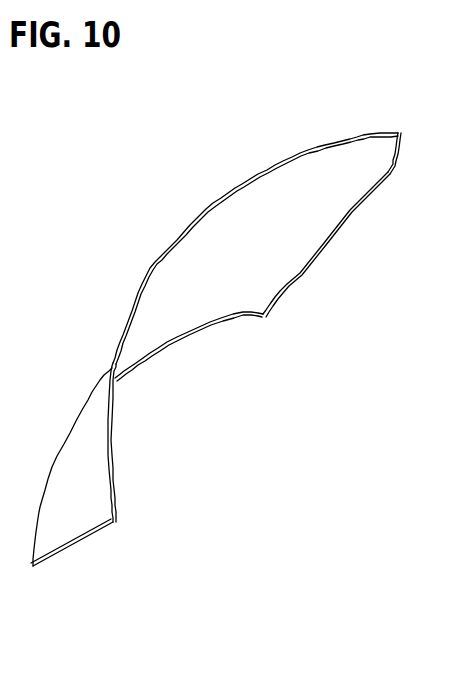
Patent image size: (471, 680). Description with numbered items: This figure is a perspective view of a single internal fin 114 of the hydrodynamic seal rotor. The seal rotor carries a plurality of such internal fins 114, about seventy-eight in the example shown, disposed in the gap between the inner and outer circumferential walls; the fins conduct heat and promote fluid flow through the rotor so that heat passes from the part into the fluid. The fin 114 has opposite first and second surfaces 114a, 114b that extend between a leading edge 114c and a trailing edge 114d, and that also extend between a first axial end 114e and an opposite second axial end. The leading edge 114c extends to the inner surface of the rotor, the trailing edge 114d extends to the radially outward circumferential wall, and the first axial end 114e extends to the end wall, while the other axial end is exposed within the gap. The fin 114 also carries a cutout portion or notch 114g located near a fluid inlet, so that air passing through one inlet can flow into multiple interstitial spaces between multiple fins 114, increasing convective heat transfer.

The internal fin 114 is at (352, 210).
The first surface 114a is at (183, 307).
The second surface 114b is at (105, 385).
The leading edge 114c is at (147, 355).
The trailing edge 114d is at (209, 214).
The first axial end 114e is at (55, 560).
The cutout portion or notch 114g is at (398, 152).